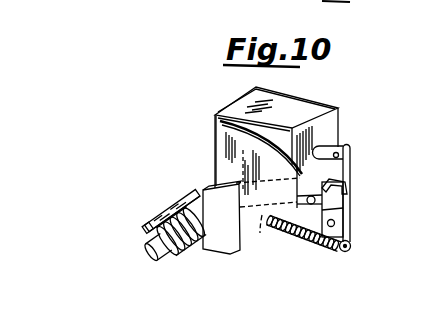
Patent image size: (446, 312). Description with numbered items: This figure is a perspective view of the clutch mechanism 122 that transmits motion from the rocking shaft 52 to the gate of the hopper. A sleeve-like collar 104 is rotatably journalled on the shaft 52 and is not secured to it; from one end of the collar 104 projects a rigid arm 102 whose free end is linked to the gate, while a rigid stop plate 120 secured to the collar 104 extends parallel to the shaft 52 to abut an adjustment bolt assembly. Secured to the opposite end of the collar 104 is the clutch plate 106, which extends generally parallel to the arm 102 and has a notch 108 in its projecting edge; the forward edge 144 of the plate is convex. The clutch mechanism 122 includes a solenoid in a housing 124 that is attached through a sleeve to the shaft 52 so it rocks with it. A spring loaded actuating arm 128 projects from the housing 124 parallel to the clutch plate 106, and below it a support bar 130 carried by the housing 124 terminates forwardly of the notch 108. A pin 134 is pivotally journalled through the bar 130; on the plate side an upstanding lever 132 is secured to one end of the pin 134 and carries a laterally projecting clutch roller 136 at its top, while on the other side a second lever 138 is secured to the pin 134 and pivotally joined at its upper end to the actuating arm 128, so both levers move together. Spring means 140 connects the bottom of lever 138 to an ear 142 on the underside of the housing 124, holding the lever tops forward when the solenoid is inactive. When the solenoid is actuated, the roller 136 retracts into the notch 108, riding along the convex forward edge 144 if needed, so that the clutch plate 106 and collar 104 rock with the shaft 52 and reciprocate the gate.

The shaft 52 is at (148, 251).
The rigid arm 102 is at (222, 250).
The collar 104 is at (192, 188).
The clutch plate 106 is at (218, 133).
The notch 108 is at (300, 178).
The stop plate 120 is at (151, 223).
The clutch mechanism 122 is at (323, 90).
The housing 124 is at (238, 99).
The spring loaded actuating arm 128 is at (343, 146).
The support bar 130 is at (352, 212).
The upstanding lever 132 is at (348, 199).
The pin 134 is at (353, 233).
The clutch roller 136 is at (350, 187).
The second lever 138 is at (350, 165).
The spring means 140 is at (292, 220).
The ear 142 is at (260, 233).
The forward edge 144 is at (281, 110).